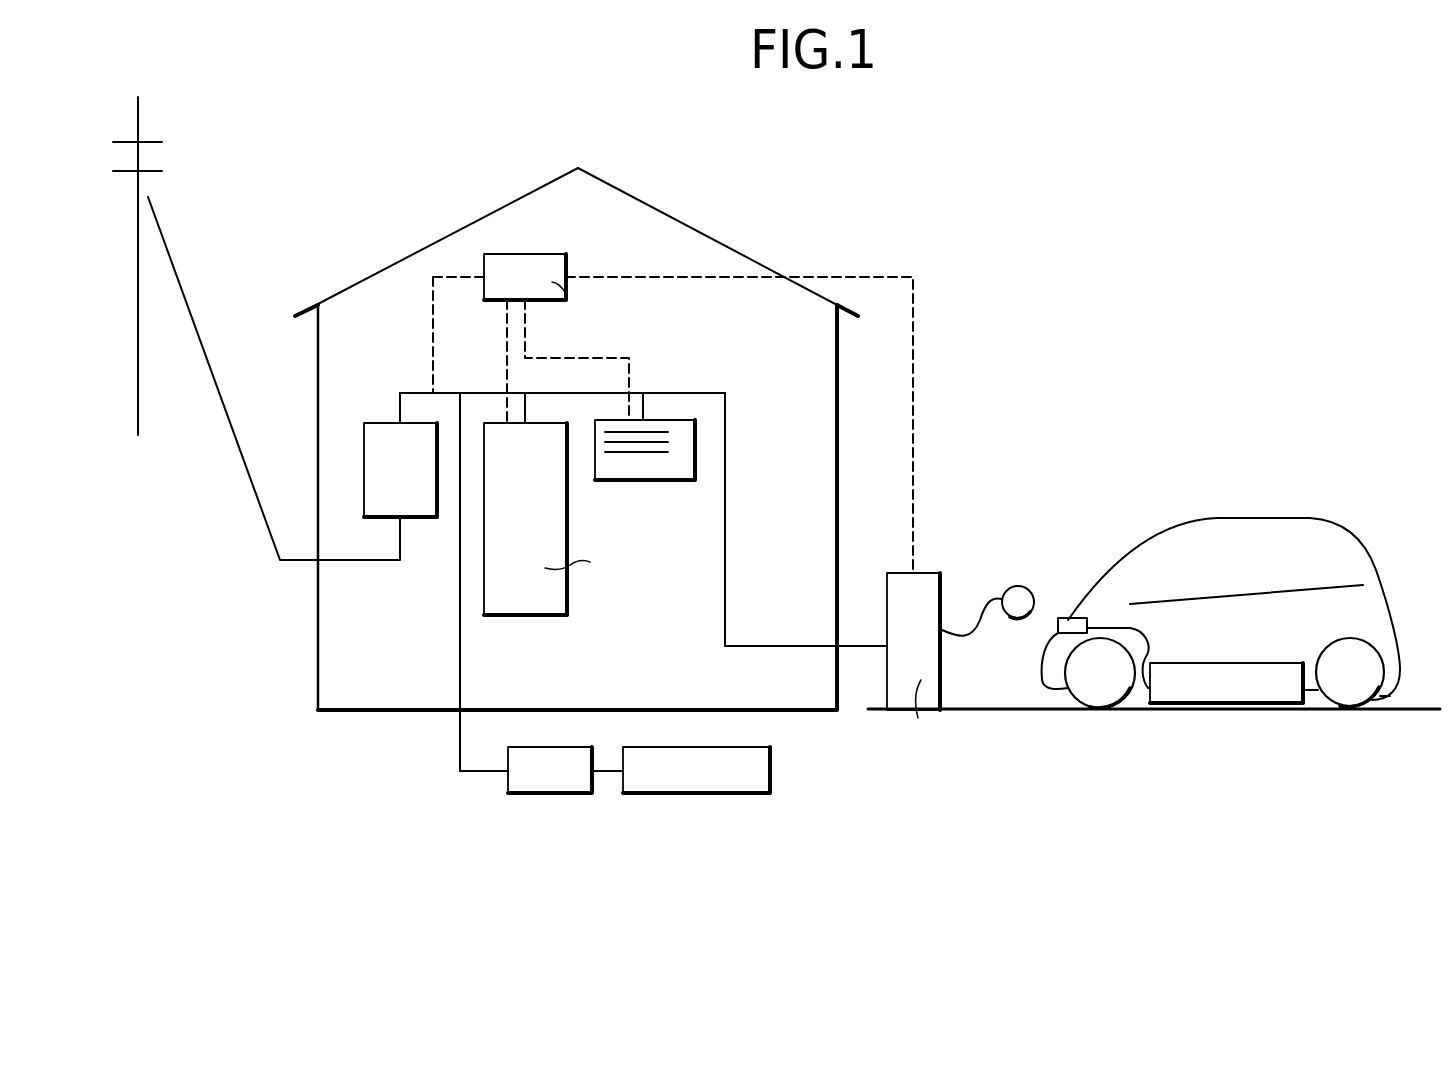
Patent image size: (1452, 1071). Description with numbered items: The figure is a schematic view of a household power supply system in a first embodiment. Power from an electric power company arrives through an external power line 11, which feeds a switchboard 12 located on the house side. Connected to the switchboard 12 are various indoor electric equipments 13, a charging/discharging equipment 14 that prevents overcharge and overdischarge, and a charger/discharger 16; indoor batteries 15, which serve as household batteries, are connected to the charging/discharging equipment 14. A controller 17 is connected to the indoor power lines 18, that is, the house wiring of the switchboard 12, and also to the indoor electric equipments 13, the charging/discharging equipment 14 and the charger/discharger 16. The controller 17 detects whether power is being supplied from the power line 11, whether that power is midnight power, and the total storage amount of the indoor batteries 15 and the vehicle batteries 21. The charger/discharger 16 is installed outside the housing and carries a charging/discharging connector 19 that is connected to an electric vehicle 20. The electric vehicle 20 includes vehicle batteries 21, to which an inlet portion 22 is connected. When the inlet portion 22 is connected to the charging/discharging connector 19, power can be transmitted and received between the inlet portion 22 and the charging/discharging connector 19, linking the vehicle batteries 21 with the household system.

The power line 11 is at (179, 152).
The switchboard 12 is at (374, 423).
The indoor electric equipments 13 is at (567, 521).
The charging/discharging equipment 14 is at (550, 795).
The indoor batteries 15 is at (692, 795).
The charger/discharger 16 is at (950, 560).
The controller 17 is at (547, 254).
The indoor power lines 18 is at (418, 391).
The charging/discharging connector 19 is at (1018, 586).
The electric vehicle 20 is at (1316, 507).
The vehicle batteries 21 is at (1225, 705).
The inlet portion 22 is at (1070, 617).